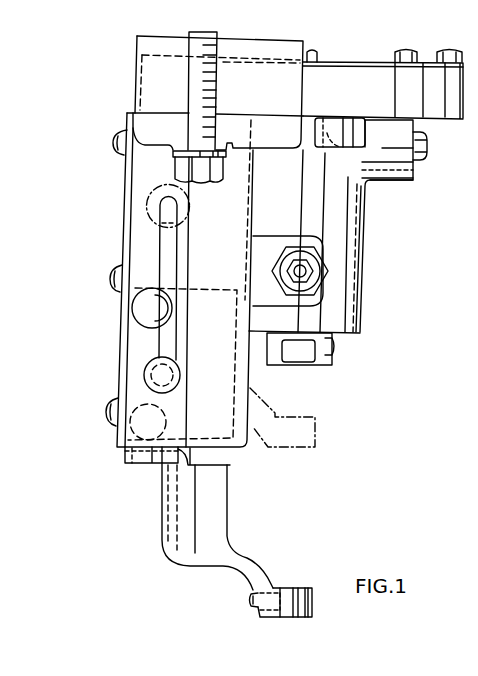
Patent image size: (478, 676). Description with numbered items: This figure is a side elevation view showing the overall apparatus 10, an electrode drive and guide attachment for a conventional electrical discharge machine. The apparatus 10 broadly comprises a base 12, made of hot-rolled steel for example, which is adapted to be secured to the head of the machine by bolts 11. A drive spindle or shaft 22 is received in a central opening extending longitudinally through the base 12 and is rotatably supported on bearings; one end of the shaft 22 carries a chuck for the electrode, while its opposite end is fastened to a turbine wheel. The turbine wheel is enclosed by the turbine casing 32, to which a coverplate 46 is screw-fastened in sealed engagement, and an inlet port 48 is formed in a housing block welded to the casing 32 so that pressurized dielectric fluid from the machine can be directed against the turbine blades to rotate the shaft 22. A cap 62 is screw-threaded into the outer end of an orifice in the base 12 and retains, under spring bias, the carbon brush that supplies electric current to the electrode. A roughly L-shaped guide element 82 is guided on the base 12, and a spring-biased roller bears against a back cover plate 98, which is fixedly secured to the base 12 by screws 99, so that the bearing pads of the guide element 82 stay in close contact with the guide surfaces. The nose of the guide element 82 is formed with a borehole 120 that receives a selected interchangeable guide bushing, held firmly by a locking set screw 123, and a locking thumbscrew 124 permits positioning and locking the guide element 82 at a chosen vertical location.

The apparatus 10 is at (93, 210).
The bolts 11 is at (201, 176).
The base 12 is at (353, 238).
The drive spindle or shaft 22 is at (332, 345).
The turbine casing 32 is at (354, 100).
The coverplate 46 is at (355, 62).
The inlet port 48 is at (335, 147).
The cap 62 is at (421, 163).
The guide element 82 is at (161, 528).
The back cover plate 98 is at (128, 178).
The screws 99 is at (113, 290).
The borehole 120 is at (295, 584).
The locking set screw 123 is at (250, 603).
The locking thumbscrew 124 is at (180, 372).